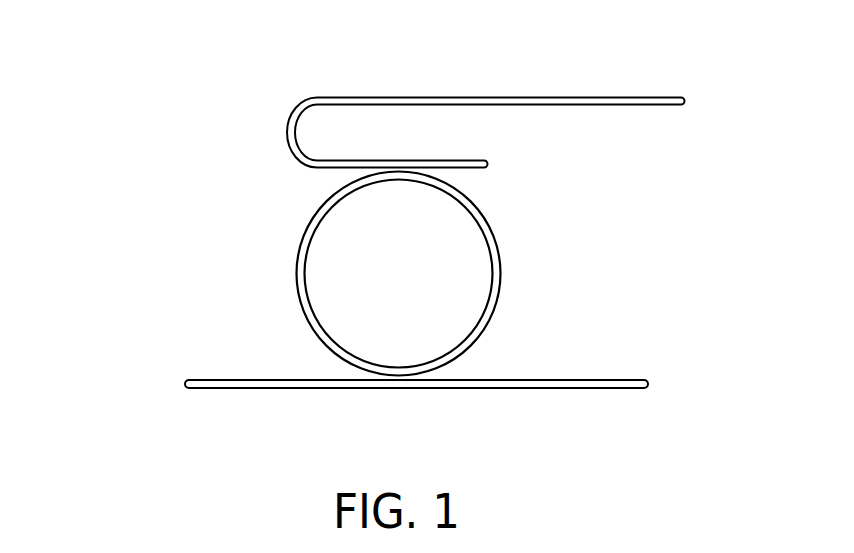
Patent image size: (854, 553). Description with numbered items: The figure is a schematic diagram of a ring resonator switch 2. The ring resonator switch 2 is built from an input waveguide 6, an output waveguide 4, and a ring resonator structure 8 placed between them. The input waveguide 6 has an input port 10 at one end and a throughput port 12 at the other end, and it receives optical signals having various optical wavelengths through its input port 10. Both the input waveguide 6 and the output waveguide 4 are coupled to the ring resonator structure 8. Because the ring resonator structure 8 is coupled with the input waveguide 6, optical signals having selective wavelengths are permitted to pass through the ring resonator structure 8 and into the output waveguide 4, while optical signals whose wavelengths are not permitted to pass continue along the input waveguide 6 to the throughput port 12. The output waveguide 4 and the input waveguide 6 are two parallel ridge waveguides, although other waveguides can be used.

The ring resonator switch 2 is at (79, 67).
The output waveguide 4 is at (409, 89).
The input waveguide 6 is at (362, 391).
The ring resonator structure 8 is at (297, 247).
The input port 10 is at (184, 389).
The throughput port 12 is at (662, 388).